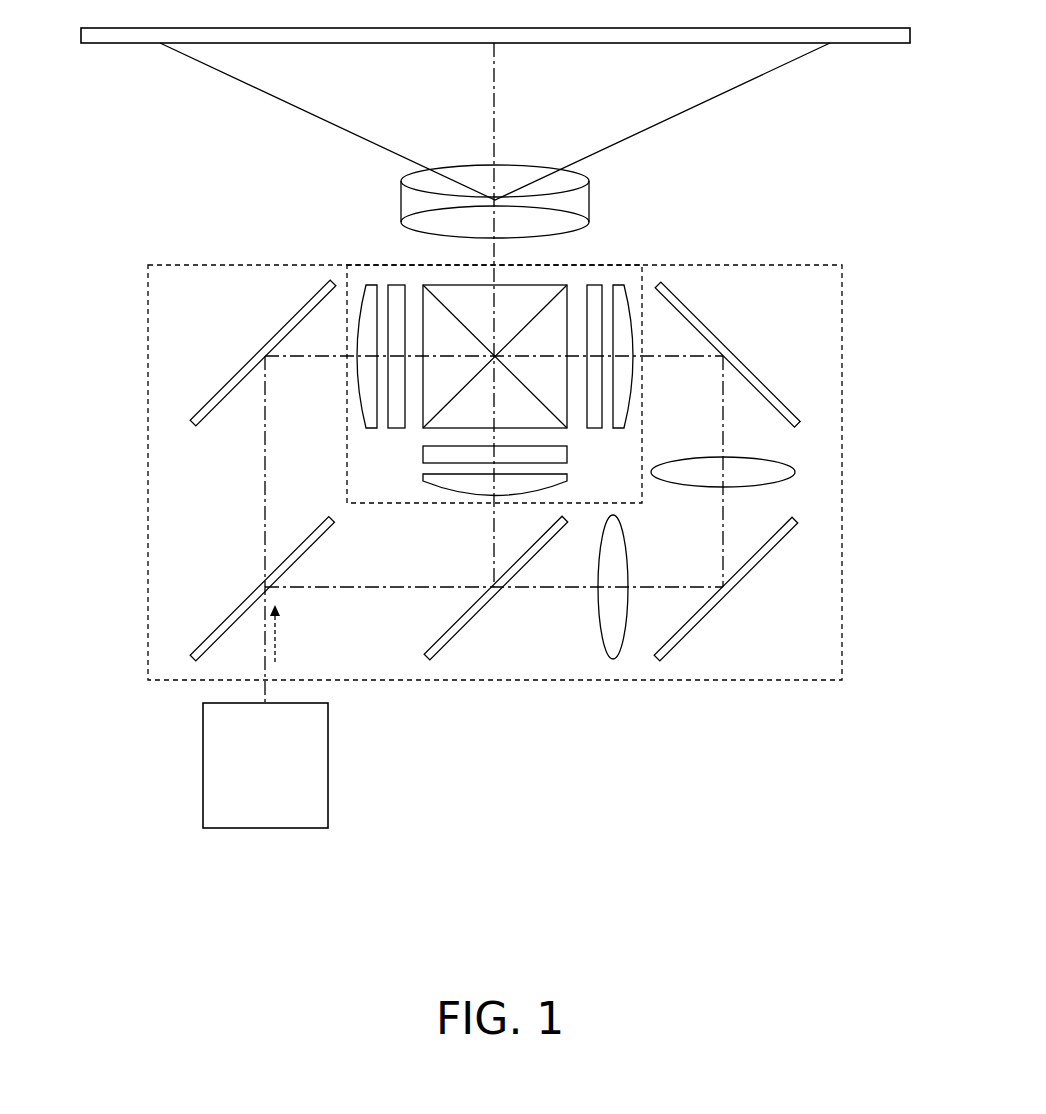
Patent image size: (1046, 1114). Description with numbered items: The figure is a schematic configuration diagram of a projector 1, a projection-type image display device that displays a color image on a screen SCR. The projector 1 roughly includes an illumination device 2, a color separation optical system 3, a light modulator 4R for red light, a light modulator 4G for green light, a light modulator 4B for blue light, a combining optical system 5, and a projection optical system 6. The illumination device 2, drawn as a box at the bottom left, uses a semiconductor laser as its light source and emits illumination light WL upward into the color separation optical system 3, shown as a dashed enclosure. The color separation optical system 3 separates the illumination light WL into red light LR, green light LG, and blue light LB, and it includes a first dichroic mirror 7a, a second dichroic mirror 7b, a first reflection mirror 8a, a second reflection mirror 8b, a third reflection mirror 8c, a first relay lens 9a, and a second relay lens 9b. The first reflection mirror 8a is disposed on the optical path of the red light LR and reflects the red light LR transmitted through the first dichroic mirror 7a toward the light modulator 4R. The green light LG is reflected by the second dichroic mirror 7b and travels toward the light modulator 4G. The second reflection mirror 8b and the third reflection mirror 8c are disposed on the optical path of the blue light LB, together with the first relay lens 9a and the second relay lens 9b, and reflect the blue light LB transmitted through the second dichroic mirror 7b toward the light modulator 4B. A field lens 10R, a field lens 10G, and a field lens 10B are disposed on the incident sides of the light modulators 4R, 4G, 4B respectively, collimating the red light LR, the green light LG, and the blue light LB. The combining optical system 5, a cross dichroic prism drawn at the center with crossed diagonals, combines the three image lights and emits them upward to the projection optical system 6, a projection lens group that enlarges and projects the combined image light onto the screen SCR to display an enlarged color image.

The projector 1 is at (497, 428).
The illumination device 2 is at (330, 763).
The color separation optical system 3 is at (146, 414).
The light modulator for red light 4R is at (392, 285).
The light modulator for green light 4G is at (425, 456).
The light modulator for blue light 4B is at (598, 285).
The combining optical system 5 is at (519, 297).
The projection optical system 6 is at (475, 173).
The first dichroic mirror 7a is at (228, 628).
The second dichroic mirror 7b is at (471, 623).
The first reflection mirror 8a is at (240, 378).
The second reflection mirror 8b is at (750, 571).
The third reflection mirror 8c is at (752, 381).
The first relay lens 9a is at (598, 610).
The second relay lens 9b is at (795, 468).
The field lens 10R is at (368, 285).
The field lens 10G is at (430, 478).
The field lens 10B is at (622, 285).
The screen SCR is at (873, 45).
The illumination light WL is at (278, 640).
The red light LR is at (263, 492).
The green light LG is at (492, 541).
The blue light LB is at (722, 534).